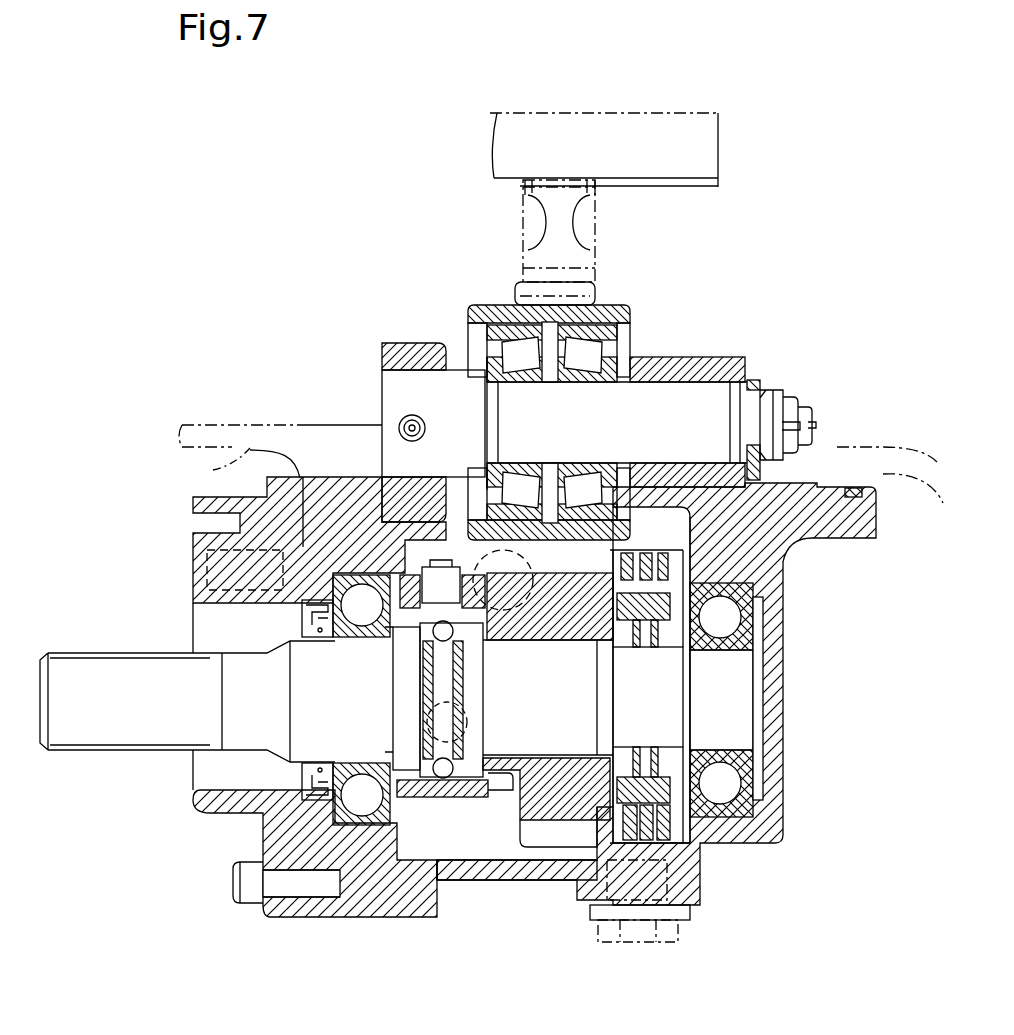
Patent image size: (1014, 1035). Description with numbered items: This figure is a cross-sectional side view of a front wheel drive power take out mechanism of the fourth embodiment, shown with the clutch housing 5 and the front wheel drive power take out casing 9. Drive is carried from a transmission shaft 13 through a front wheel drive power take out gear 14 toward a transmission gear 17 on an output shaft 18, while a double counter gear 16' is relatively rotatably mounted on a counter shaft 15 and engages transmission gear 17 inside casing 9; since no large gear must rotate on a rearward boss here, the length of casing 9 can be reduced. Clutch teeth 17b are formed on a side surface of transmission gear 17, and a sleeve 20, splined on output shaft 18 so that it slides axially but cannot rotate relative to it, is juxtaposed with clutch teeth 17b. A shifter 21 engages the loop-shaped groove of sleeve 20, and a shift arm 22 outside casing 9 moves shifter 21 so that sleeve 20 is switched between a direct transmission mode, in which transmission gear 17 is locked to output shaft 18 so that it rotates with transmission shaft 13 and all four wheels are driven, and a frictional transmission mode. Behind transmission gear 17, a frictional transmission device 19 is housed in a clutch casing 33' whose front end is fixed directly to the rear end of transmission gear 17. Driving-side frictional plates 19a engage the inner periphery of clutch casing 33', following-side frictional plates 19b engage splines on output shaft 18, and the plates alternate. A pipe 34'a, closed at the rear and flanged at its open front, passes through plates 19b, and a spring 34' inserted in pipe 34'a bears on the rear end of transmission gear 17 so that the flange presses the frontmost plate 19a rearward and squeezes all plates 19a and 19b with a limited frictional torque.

The transmission shaft 13 is at (638, 168).
The front wheel drive power take out gear 14 is at (598, 238).
The double counter gear 16' is at (526, 274).
The front wheel drive power take out casing 9 is at (397, 343).
The counter shaft 15 is at (582, 446).
The clutch housing 5 is at (280, 456).
The clutch casing 33' is at (646, 572).
The shifter 21 is at (446, 574).
The shift arm 22 is at (597, 623).
The output shaft 18 is at (569, 729).
The following-side frictional plates 19b is at (667, 755).
The spring 34' is at (766, 700).
The pipe 34'a is at (735, 786).
The frictional transmission device 19 is at (677, 821).
The driving-side frictional plates 19a is at (647, 840).
The transmission gear 17 is at (533, 852).
The clutch teeth 17b is at (490, 792).
The sleeve 20 is at (422, 824).